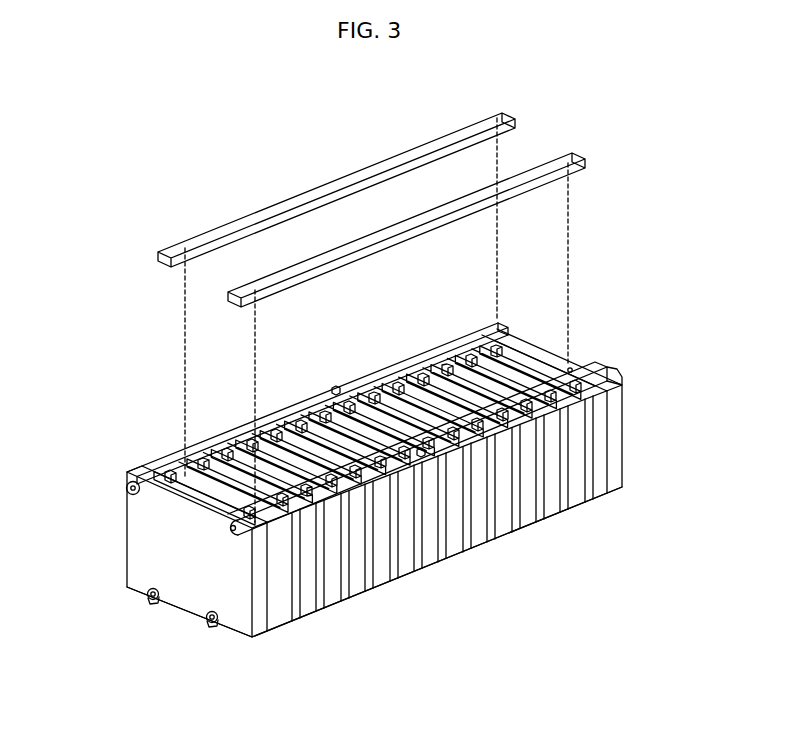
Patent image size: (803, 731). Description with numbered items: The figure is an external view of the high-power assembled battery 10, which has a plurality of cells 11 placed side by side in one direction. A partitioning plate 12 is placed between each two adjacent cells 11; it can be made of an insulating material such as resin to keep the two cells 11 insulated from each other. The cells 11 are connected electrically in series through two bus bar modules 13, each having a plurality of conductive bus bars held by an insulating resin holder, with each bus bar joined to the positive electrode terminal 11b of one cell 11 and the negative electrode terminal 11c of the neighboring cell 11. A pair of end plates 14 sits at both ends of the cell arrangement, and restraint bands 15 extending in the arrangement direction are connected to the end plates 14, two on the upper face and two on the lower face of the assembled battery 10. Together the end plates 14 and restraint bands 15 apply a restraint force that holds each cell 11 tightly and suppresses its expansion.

The high-power assembled battery 10 is at (447, 613).
The cell 11 is at (520, 362).
The positive electrode terminal 11b is at (568, 368).
The negative electrode terminal 11c is at (487, 335).
The partitioning plate 12 is at (447, 390).
The bus bar module 13 is at (288, 210).
The end plate 14 is at (613, 423).
The restraint band 15 is at (335, 392).